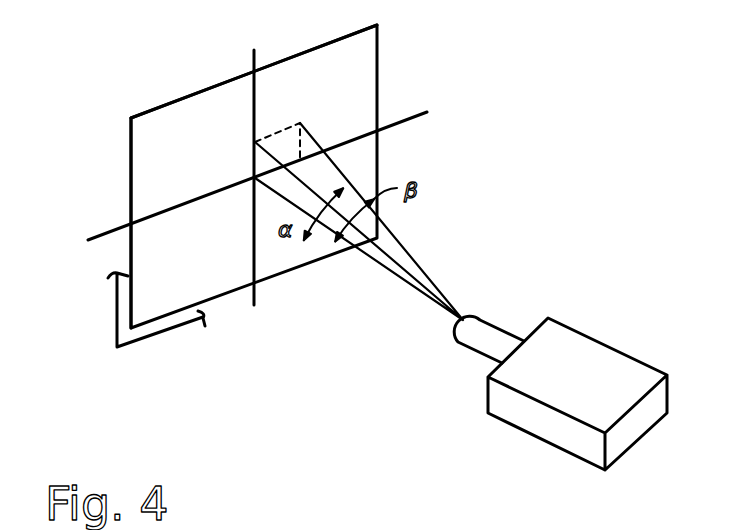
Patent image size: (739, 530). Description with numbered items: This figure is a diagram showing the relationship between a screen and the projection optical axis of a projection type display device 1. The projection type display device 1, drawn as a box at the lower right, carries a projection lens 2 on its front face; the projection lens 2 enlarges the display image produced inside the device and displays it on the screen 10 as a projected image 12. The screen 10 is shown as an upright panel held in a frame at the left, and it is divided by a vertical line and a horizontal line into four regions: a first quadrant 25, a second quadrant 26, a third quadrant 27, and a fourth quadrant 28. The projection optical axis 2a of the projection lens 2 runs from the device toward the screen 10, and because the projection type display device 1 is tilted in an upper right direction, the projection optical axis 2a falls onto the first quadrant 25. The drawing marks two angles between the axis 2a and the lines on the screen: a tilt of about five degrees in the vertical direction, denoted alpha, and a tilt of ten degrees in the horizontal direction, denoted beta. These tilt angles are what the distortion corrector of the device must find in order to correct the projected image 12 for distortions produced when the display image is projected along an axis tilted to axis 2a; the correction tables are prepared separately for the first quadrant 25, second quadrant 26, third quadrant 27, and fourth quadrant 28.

The projection type display device 1 is at (603, 340).
The projection lens 2 is at (498, 322).
The axis 2a is at (407, 287).
The screen 10 is at (162, 331).
The projected image 12 is at (155, 175).
The first quadrant 25 is at (363, 83).
The second quadrant 26 is at (188, 113).
The third quadrant 27 is at (147, 257).
The fourth quadrant 28 is at (283, 258).